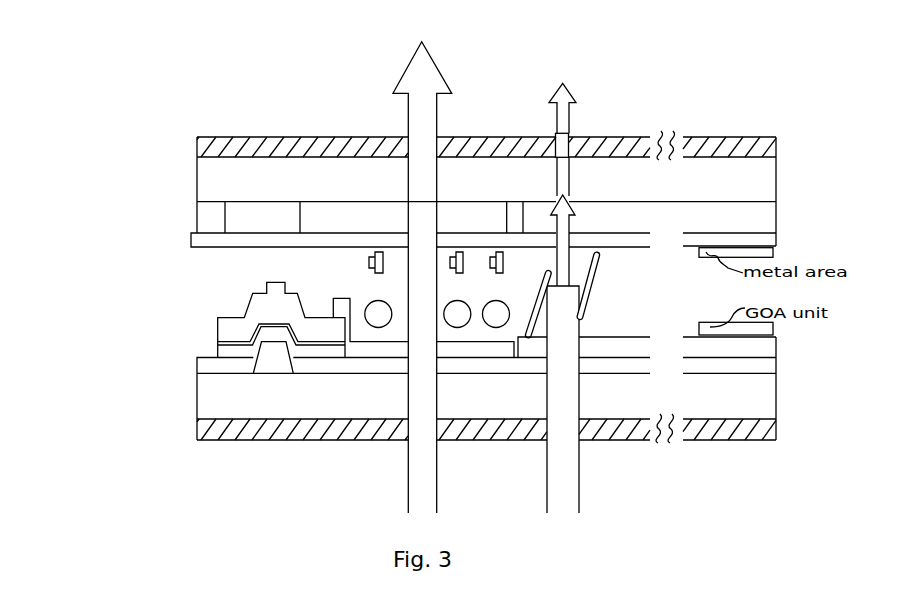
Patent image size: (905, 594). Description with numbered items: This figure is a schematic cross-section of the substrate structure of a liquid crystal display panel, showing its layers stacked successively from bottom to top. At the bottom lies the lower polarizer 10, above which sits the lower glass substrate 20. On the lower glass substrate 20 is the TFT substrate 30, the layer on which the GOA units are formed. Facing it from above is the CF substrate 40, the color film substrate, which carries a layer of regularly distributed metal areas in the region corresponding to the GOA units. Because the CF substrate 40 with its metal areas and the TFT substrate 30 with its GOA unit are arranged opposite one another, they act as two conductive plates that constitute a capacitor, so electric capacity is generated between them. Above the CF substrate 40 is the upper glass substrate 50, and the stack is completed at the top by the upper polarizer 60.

The lower polarizer 10 is at (197, 438).
The lower glass substrate 20 is at (197, 402).
The TFT substrate 30 is at (215, 333).
The CF substrate 40 is at (197, 221).
The upper glass substrate 50 is at (197, 180).
The upper polarizer 60 is at (197, 147).